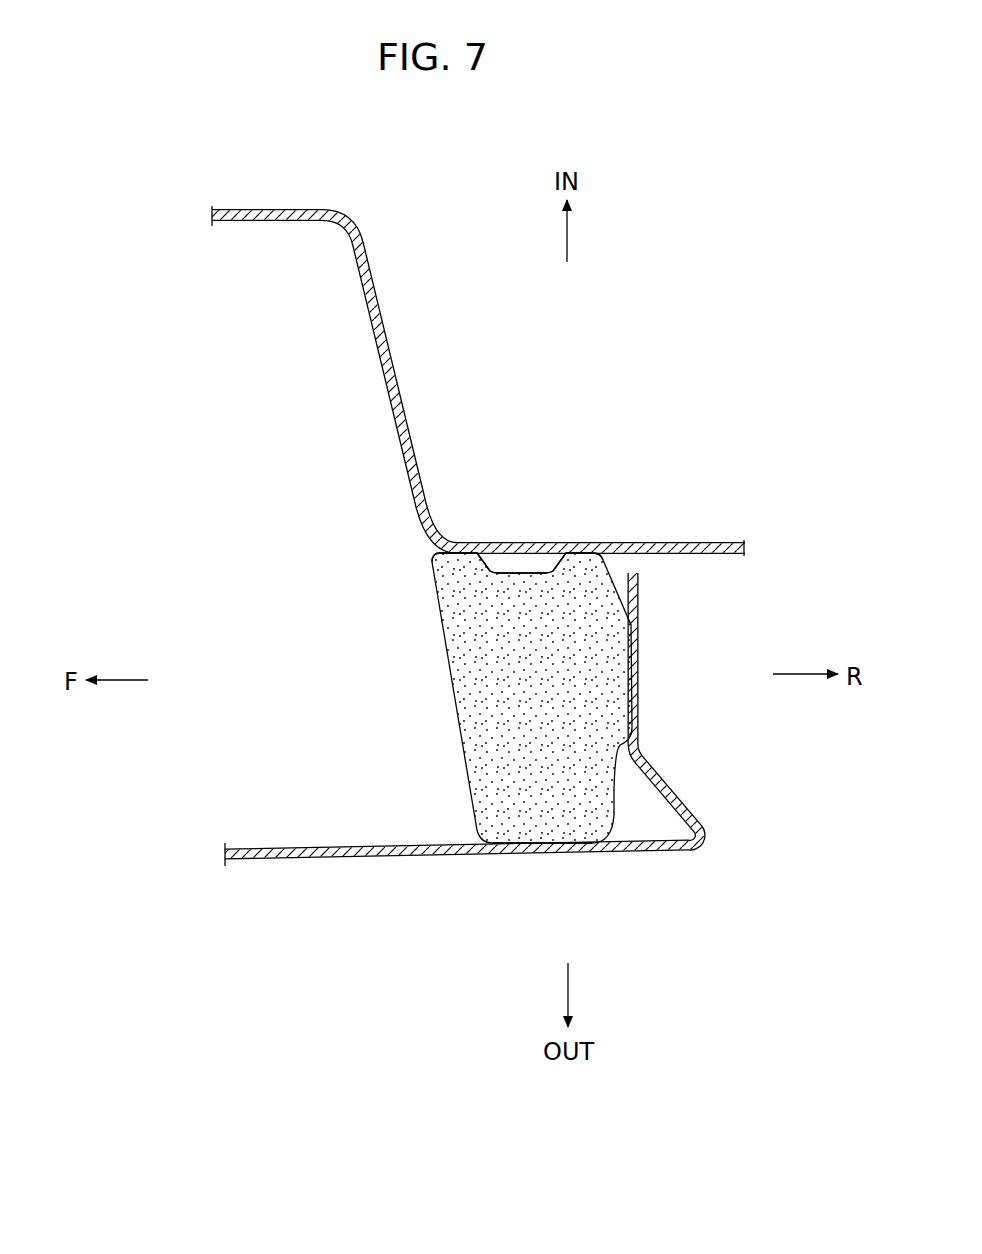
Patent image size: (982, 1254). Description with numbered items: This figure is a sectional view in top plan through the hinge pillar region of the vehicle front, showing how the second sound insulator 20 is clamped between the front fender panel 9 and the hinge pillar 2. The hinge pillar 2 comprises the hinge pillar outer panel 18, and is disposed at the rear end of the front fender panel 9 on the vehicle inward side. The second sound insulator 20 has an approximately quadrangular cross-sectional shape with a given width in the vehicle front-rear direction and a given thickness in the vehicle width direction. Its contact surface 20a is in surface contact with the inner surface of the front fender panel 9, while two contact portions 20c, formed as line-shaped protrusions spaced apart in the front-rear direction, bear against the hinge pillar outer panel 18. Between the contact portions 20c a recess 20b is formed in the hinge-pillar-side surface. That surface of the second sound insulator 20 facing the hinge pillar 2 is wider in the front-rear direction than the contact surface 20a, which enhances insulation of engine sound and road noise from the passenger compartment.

The hinge pillar 2 is at (407, 478).
The hinge pillar outer panel 18 is at (688, 543).
The front fender panel 9 is at (325, 861).
The second sound insulator 20 is at (455, 729).
The contact surface 20a is at (513, 855).
The recesses 20b is at (534, 573).
The contact portions 20c is at (460, 545).